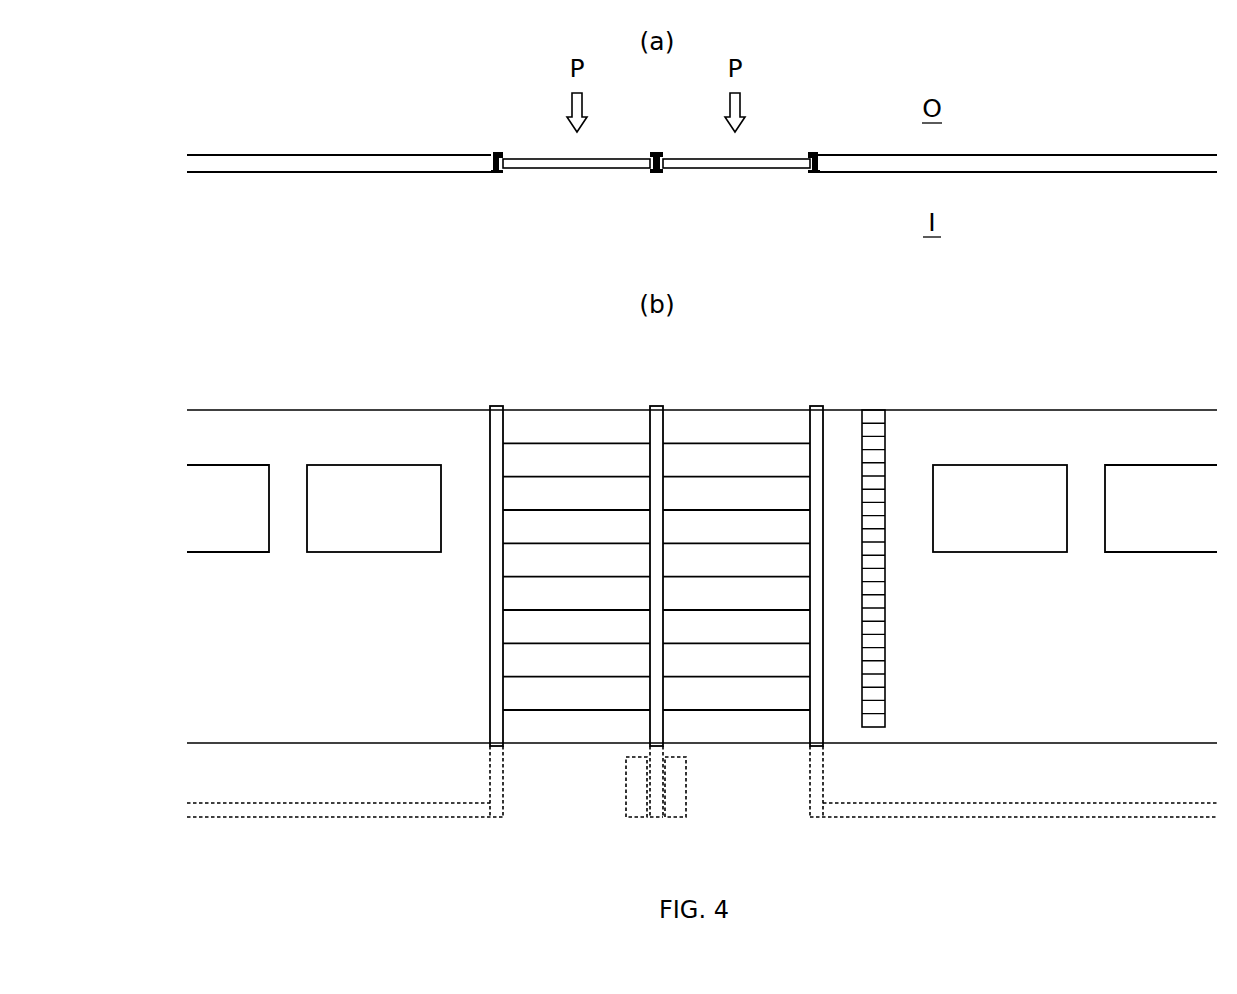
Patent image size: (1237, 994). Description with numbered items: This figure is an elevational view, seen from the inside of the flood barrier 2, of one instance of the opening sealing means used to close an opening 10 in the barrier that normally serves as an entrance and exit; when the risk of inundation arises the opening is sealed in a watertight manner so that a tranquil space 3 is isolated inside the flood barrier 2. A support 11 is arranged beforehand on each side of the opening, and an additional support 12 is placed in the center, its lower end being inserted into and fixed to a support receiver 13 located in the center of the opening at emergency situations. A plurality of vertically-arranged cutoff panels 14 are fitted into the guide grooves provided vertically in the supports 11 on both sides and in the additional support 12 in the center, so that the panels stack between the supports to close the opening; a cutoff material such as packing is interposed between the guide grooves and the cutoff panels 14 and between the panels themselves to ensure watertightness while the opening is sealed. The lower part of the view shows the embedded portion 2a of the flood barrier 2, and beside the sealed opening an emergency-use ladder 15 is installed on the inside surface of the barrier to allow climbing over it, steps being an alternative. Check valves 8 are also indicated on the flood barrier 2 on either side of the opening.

The flood barrier 2 is at (282, 154).
The embedded portion 2a is at (300, 773).
The space 3 is at (668, 232).
The check valve 8 is at (236, 478).
The opening 10 is at (572, 178).
The support 11 is at (496, 152).
The additional support 12 is at (653, 152).
The support receiver 13 is at (670, 785).
The cutoff panel 14 is at (592, 170).
The ladder 15 is at (886, 624).